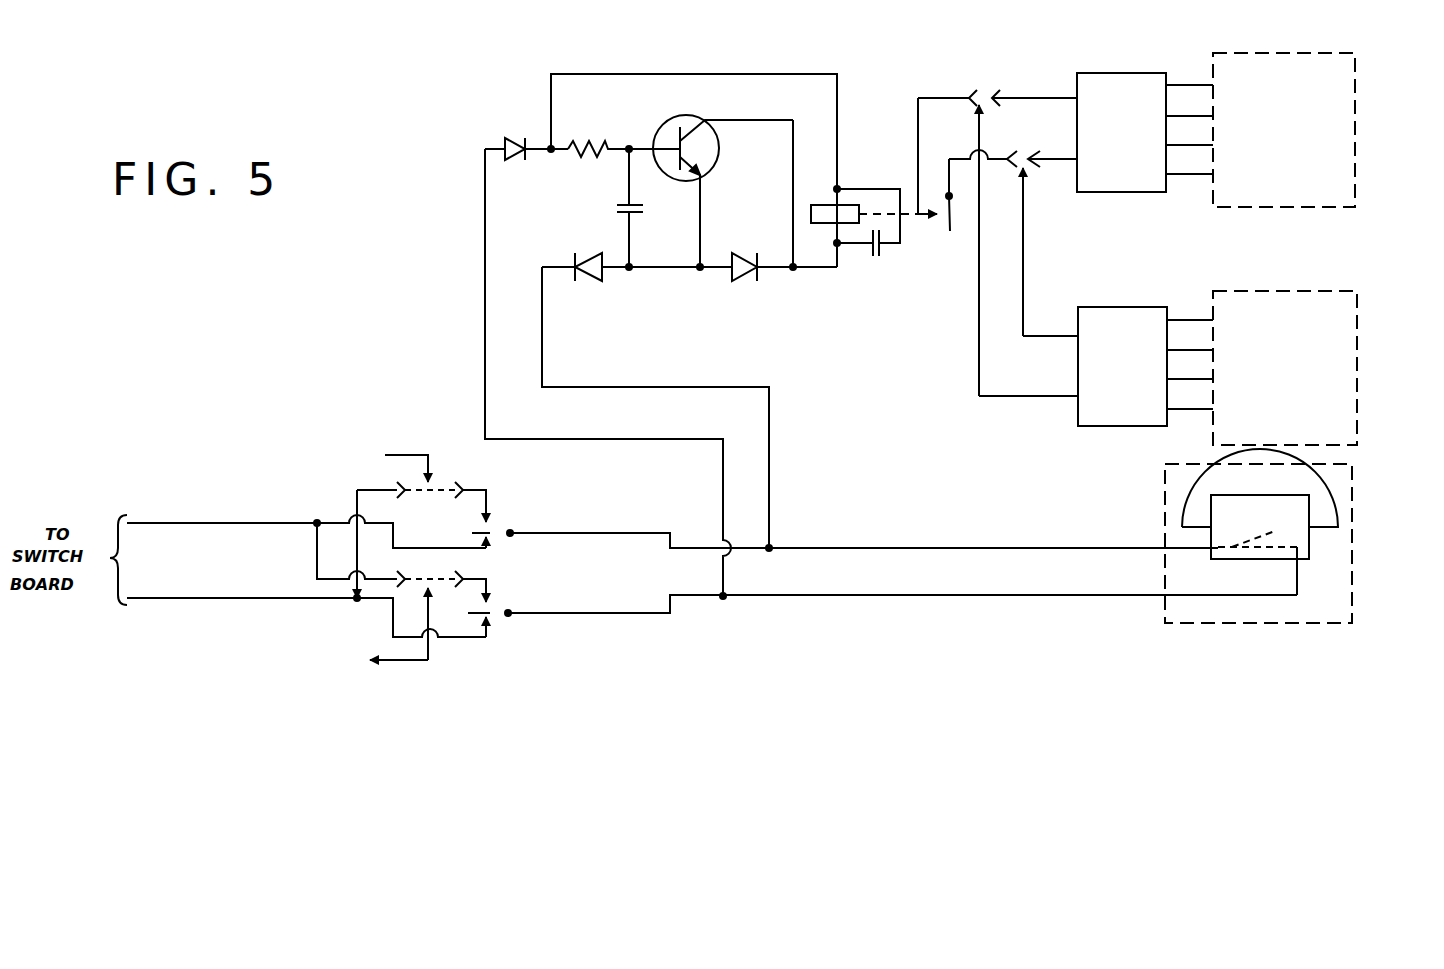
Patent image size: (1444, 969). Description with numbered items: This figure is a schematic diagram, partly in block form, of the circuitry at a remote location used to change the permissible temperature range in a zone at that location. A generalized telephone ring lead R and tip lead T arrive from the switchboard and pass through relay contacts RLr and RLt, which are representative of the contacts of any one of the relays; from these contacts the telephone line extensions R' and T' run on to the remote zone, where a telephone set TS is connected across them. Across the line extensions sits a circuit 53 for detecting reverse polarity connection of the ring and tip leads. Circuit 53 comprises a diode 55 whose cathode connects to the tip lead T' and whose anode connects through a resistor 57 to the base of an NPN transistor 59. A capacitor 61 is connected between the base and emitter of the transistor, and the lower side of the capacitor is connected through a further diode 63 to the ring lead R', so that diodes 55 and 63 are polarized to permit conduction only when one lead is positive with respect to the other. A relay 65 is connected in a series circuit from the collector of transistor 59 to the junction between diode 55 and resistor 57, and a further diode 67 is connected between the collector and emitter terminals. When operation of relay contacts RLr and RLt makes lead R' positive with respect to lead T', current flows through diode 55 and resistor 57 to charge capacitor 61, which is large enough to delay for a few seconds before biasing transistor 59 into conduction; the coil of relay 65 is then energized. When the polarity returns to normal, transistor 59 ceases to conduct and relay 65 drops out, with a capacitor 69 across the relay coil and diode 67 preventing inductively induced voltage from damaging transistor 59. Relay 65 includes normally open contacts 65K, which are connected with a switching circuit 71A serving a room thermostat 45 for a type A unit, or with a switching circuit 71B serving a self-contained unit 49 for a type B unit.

The room thermostat 45 is at (1290, 53).
The self-contained unit 49 is at (1265, 291).
The circuit 53 is at (767, 191).
The diode 55 is at (515, 137).
The resistor 57 is at (590, 142).
The NPN transistor 59 is at (690, 118).
The capacitor 61 is at (617, 206).
The diode 63 is at (590, 282).
The relay 65 is at (838, 205).
The normally open contacts 65K is at (944, 228).
The diode 67 is at (742, 282).
The capacitor 69 is at (879, 258).
The switching circuit 71A is at (1128, 73).
The switching circuit 71B is at (1128, 307).
The telephone set TS is at (1193, 505).
The ring lead R is at (306, 516).
The tip lead T is at (306, 598).
The ring lead extension R' is at (862, 516).
The tip lead extension T' is at (901, 593).
The relay contacts RLr is at (490, 530).
The relay contacts RLt is at (490, 618).